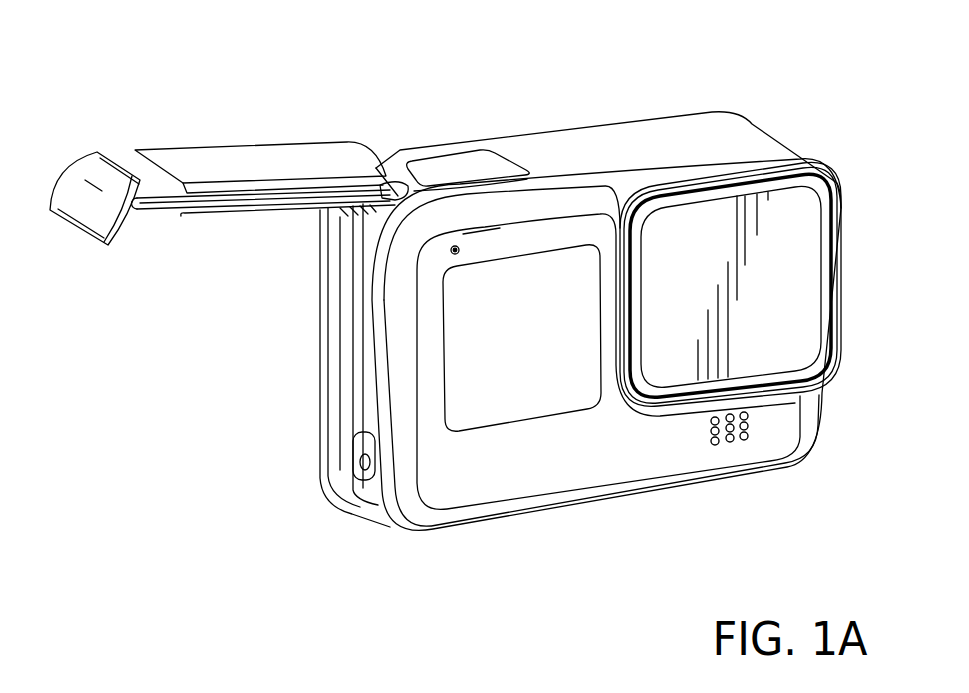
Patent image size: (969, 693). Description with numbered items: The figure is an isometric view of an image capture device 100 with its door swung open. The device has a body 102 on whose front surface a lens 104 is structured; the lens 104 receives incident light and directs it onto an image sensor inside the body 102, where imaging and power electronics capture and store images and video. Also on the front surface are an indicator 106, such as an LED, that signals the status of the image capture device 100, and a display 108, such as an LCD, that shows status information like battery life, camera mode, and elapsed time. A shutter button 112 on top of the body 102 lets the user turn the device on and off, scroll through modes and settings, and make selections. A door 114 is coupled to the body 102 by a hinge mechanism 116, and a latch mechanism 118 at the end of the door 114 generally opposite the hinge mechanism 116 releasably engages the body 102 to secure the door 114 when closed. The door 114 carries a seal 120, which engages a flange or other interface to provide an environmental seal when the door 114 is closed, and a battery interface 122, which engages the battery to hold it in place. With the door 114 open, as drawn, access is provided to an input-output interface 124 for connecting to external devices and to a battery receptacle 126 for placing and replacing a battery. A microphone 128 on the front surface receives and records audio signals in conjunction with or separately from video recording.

The image capture device 100 is at (808, 45).
The body 102 is at (637, 133).
The lens 104 is at (803, 283).
The indicator 106 is at (451, 251).
The display 108 is at (523, 398).
The shutter button 112 is at (421, 162).
The door 114 is at (273, 157).
The hinge mechanism 116 is at (400, 183).
The latch mechanism 118 is at (73, 190).
The seal 120 is at (167, 203).
The battery interface 122 is at (217, 214).
The input-output (I/O) interface 124 is at (367, 458).
The battery receptacle 126 is at (362, 236).
The microphone 128 is at (731, 442).